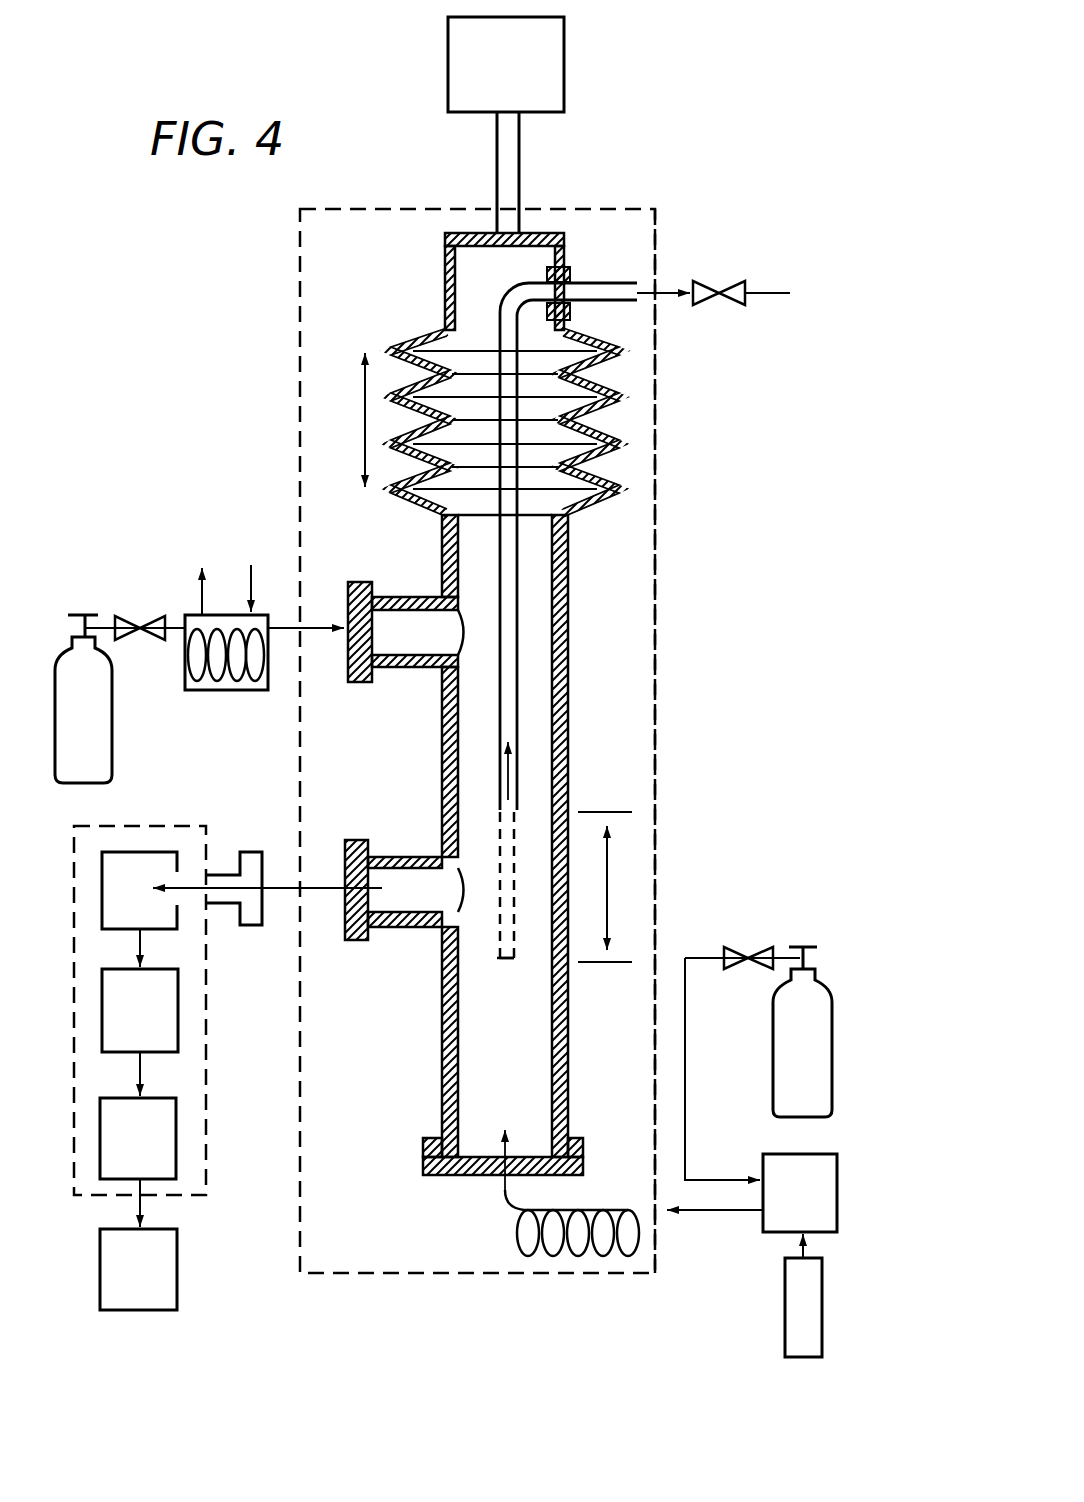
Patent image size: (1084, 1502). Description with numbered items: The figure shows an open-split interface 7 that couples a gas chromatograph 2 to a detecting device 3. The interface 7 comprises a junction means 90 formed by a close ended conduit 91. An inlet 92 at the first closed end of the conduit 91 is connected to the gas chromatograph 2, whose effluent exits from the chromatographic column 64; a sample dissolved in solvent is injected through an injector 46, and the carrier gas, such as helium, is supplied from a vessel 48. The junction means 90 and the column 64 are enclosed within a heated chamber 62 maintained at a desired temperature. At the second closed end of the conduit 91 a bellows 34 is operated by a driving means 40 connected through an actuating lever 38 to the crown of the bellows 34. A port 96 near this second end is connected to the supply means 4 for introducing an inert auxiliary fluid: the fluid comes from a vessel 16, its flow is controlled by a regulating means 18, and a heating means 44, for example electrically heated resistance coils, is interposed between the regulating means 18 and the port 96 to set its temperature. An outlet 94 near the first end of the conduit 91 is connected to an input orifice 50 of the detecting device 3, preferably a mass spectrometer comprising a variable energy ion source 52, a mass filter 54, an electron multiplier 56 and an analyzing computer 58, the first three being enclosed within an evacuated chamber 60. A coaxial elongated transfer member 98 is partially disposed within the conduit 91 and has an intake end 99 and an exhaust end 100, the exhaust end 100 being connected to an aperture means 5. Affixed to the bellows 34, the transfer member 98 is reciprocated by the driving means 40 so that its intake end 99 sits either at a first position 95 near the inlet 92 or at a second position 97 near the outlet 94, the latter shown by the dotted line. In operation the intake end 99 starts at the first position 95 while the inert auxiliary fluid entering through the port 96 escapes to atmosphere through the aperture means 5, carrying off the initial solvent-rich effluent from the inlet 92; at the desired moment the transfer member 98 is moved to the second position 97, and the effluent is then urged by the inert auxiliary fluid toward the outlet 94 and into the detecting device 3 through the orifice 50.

The gas chromatograph 2 is at (749, 932).
The detecting device 3 is at (224, 1068).
The inert auxiliary fluid supply means 4 is at (147, 565).
The aperture means 5 is at (762, 268).
The open-split interface 7 is at (672, 392).
The vessel 16 is at (112, 702).
The inert auxiliary fluid regulating means 18 is at (89, 622).
The bellows 34 is at (590, 515).
The actuating lever 38 is at (519, 148).
The driving means 40 is at (521, 80).
The heating means 44 is at (212, 692).
The injector 46 is at (785, 1280).
The vessel 48 is at (773, 1015).
The input orifice 50 is at (299, 765).
The variable energy ion source 52 is at (155, 900).
The mass filter 54 is at (155, 1022).
The electron multiplier 56 is at (153, 1150).
The analyzing computer 58 is at (153, 1281).
The evacuated chamber 60 is at (206, 1120).
The heated chamber 62 is at (655, 665).
The chromatographic column 64 is at (570, 1210).
The junction means 90 is at (527, 845).
The close ended conduit 91 is at (567, 995).
The inlet 92 is at (500, 1180).
The outlet 94 is at (345, 900).
The first position 95 is at (498, 958).
The port 96 is at (345, 645).
The second position 97 is at (499, 812).
The elongated transfer member 98 is at (517, 608).
The intake end 99 is at (514, 790).
The exhaust end 100 is at (640, 292).